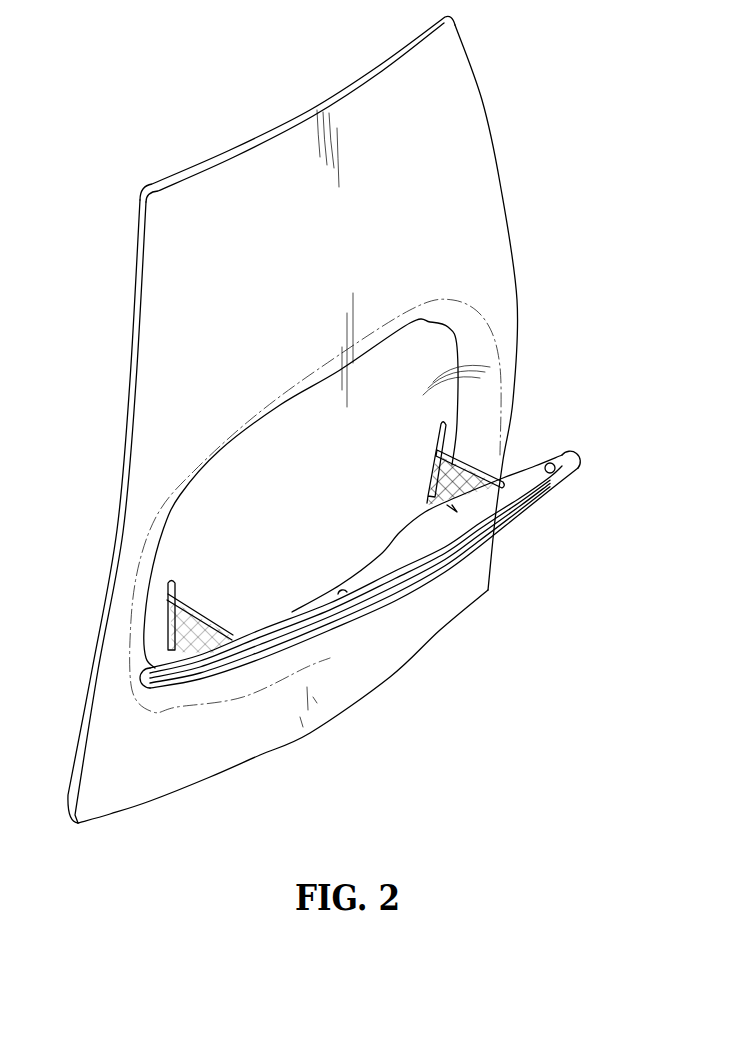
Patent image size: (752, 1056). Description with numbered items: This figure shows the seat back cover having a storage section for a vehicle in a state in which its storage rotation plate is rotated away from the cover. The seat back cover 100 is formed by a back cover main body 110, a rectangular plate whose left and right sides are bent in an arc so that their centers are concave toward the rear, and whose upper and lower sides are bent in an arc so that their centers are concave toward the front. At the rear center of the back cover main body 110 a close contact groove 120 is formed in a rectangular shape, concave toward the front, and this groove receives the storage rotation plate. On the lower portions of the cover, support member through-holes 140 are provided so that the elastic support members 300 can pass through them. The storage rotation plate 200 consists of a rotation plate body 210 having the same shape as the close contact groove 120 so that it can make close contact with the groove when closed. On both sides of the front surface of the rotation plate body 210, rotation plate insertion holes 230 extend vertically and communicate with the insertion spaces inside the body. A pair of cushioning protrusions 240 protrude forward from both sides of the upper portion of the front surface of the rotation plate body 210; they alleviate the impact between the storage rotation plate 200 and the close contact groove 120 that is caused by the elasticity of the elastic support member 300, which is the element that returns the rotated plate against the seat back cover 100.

The seat back cover 100 is at (345, 419).
The back cover main body 110 is at (336, 419).
The close contact groove 120 is at (467, 330).
The support member through-holes 140 is at (447, 430).
The storage rotation plate 200 is at (345, 550).
The rotation plate body 210 is at (423, 550).
The rotation plate insertion holes 230 is at (483, 457).
The cushioning protrusions 240 is at (580, 470).
The elastic support member 300 is at (205, 588).